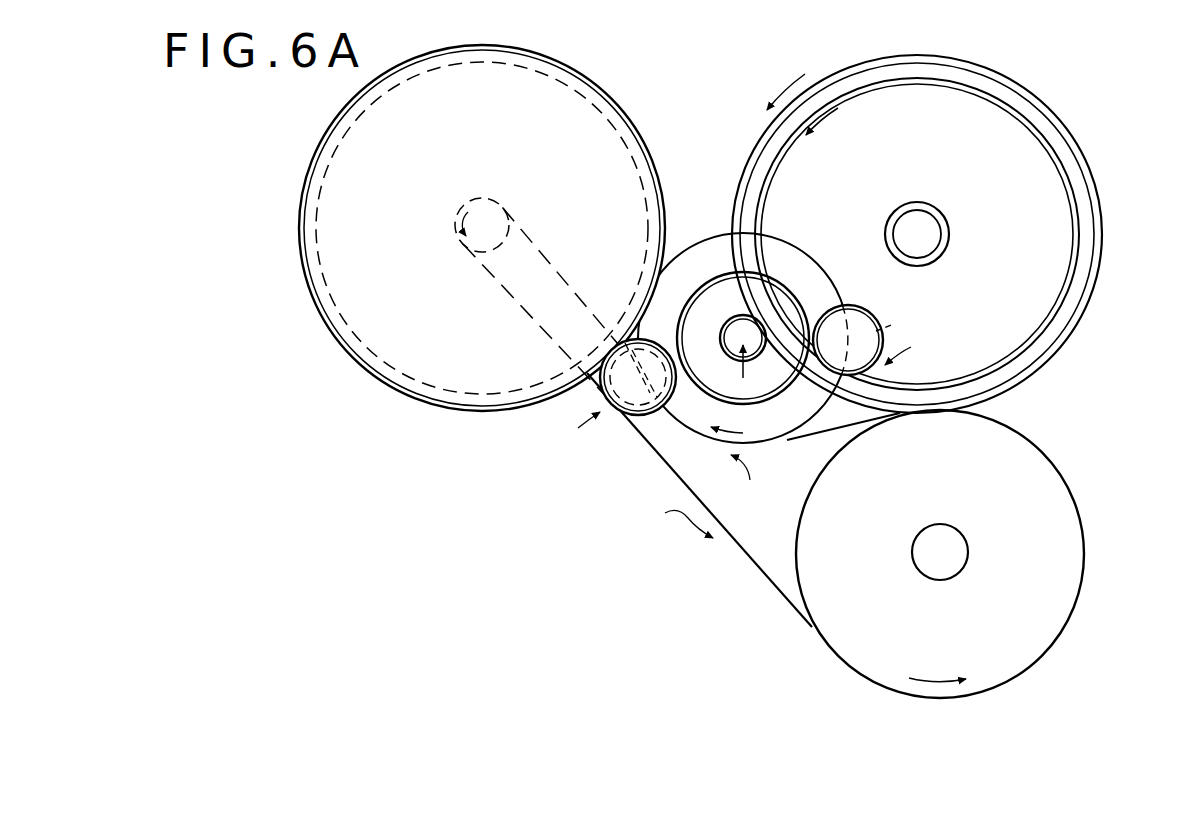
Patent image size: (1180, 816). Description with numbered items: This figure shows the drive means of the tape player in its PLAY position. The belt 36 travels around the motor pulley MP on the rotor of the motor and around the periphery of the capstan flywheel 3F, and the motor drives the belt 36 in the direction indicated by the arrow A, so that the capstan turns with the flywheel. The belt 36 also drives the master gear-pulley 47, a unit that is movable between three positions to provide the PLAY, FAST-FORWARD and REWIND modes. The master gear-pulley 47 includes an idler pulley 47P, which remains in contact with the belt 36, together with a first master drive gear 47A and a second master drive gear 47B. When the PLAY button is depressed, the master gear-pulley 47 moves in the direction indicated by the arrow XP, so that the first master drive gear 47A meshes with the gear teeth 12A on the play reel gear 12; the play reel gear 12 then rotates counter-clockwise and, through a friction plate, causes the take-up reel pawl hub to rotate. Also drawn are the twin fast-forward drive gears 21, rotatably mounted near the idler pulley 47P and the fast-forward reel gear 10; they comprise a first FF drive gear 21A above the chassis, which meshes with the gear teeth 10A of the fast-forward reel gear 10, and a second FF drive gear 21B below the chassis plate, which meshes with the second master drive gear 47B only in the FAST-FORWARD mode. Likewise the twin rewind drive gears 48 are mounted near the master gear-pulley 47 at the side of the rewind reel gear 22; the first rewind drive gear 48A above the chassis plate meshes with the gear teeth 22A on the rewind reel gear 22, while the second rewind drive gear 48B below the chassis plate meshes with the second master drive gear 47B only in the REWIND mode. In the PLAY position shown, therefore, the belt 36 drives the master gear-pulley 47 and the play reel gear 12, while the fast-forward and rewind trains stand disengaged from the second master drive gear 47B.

The rewind reel gear 22 is at (588, 94).
The gear teeth on the rewind reel gear 22A is at (625, 111).
The motor pulley MP is at (486, 204).
The reel gear 12 is at (1027, 97).
The gear teeth on the reel gear 12A is at (1093, 165).
The fast-forward reel gear 10 is at (977, 79).
The gear teeth of the fast-forward reel gear 10A is at (1063, 167).
The idler pulley 47P is at (712, 240).
The second master drive gear 47B is at (728, 293).
The first master drive gear 47A is at (730, 334).
The master gear-pulley 47 is at (750, 482).
The arrow X_P XP is at (743, 372).
The twin fast-forward drive gears 21 is at (877, 340).
The first FF drive gear 21A is at (883, 299).
The second FF drive gear 21B is at (907, 318).
The twin rewind drive gears 48 is at (613, 394).
The first rewind drive gear 48A is at (650, 414).
The second rewind drive gear 48B is at (630, 421).
The belt 36 is at (747, 556).
The arrow A is at (680, 522).
The capstan flywheel 3F is at (1038, 455).